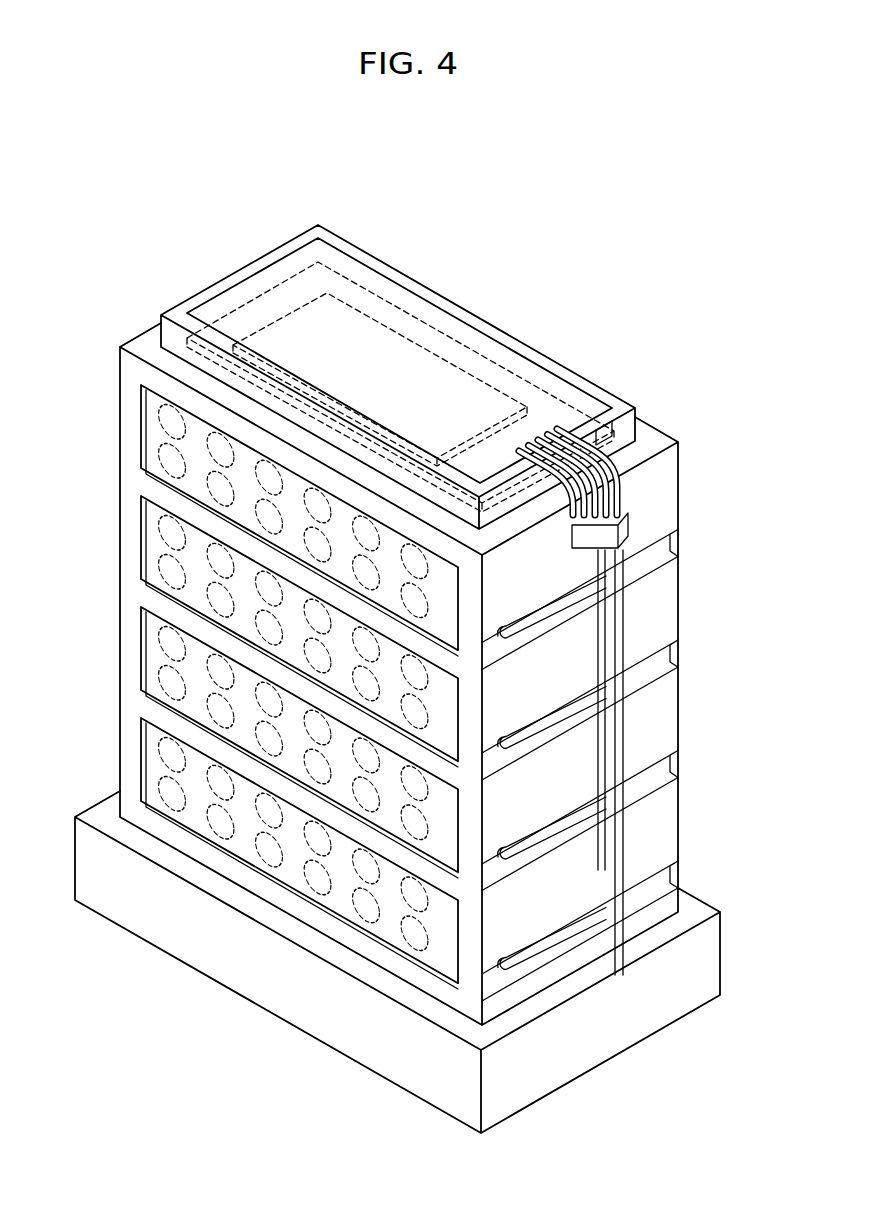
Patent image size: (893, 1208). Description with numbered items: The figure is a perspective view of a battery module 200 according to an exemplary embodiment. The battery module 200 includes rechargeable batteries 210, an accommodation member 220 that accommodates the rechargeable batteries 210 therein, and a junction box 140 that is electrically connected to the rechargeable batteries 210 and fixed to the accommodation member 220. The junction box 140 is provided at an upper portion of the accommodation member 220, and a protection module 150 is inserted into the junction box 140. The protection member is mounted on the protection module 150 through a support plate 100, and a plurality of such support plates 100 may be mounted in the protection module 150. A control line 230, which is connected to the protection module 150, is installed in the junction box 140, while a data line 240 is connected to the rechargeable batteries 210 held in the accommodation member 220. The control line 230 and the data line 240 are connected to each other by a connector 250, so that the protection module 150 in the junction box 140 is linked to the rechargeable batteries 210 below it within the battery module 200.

The support plate 100 is at (466, 310).
The junction box 140 is at (279, 250).
The protection module 150 is at (397, 285).
The battery module 200 is at (612, 297).
The rechargeable batteries 210 is at (171, 457).
The accommodation member 220 is at (680, 724).
The control line 230 is at (628, 497).
The data line 240 is at (598, 630).
The connector 250 is at (680, 545).